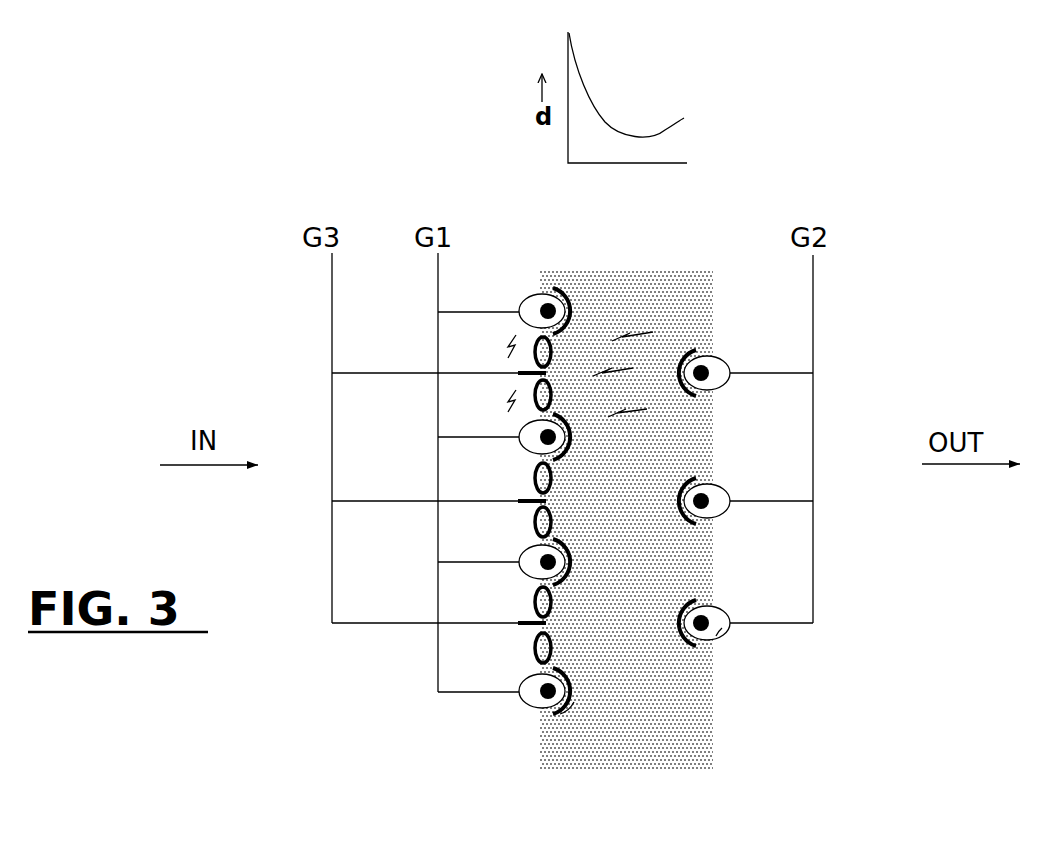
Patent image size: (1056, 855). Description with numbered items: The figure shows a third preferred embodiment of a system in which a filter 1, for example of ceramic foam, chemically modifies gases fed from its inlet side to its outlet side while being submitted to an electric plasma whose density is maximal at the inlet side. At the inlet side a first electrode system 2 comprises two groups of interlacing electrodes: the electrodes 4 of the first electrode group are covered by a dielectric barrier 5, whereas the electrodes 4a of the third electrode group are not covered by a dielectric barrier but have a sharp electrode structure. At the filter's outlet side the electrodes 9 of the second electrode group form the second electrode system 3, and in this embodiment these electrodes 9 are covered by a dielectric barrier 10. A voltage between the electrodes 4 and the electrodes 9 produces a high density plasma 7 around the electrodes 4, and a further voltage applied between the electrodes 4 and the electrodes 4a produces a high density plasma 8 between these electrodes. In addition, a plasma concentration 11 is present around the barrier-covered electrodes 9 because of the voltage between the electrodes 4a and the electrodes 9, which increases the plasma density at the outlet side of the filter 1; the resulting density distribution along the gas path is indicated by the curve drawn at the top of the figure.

The filter 1 is at (647, 735).
The first electrode system 2 is at (447, 737).
The second electrode system 3 is at (798, 563).
The electrodes 4 is at (538, 705).
The electrodes 4a is at (532, 507).
The dielectric barrier 5 is at (532, 702).
The high density plasma 7 is at (588, 715).
The high density plasma 8 is at (527, 592).
The electrodes 9 is at (725, 610).
The dielectric barrier 10 is at (722, 632).
The plasma concentration 11 is at (676, 637).